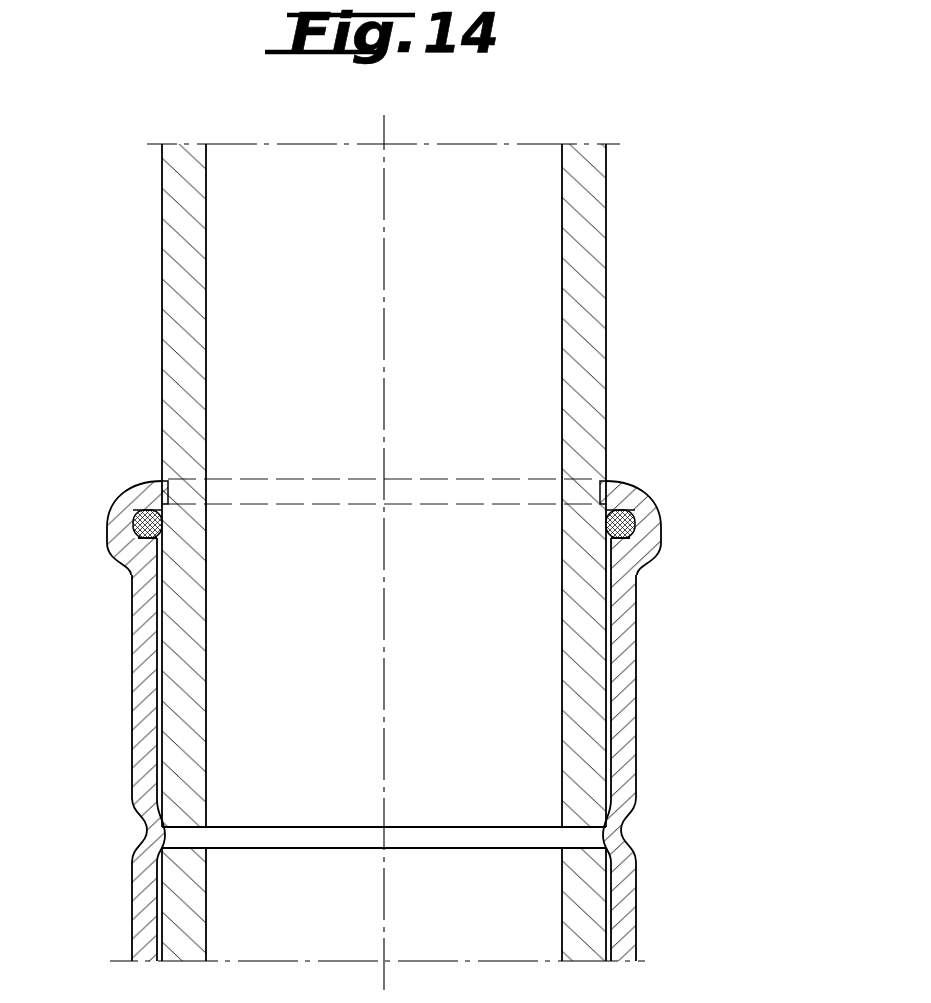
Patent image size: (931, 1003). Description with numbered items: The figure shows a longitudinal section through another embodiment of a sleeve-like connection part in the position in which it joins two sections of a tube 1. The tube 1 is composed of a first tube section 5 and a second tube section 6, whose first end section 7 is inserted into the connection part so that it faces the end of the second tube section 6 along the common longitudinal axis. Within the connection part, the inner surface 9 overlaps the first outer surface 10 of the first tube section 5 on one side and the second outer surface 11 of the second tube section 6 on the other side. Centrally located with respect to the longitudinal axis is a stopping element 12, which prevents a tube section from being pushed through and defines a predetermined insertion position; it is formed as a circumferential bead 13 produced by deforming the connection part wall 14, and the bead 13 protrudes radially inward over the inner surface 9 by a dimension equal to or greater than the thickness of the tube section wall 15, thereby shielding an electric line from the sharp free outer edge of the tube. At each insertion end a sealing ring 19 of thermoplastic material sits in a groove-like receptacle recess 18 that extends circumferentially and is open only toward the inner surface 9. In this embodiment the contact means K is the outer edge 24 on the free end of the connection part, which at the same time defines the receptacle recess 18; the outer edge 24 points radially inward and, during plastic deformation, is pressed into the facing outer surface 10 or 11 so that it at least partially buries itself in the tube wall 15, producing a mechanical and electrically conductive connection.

The tube 1 is at (648, 158).
The first tube section 5 is at (585, 229).
The second tube section 6 is at (596, 940).
The first end section 7 is at (590, 703).
The inner surface 9 is at (610, 670).
The first outer surface 10 is at (157, 630).
The second outer surface 11 is at (160, 903).
The stopping element 12 is at (150, 833).
The bead 13 is at (612, 833).
The connection part wall 14 is at (625, 898).
The tube section wall 15 is at (178, 215).
The receptacle recess 18 is at (130, 524).
The sealing ring 19 is at (147, 513).
The outer edge 24 is at (160, 497).
The contact means K is at (156, 493).